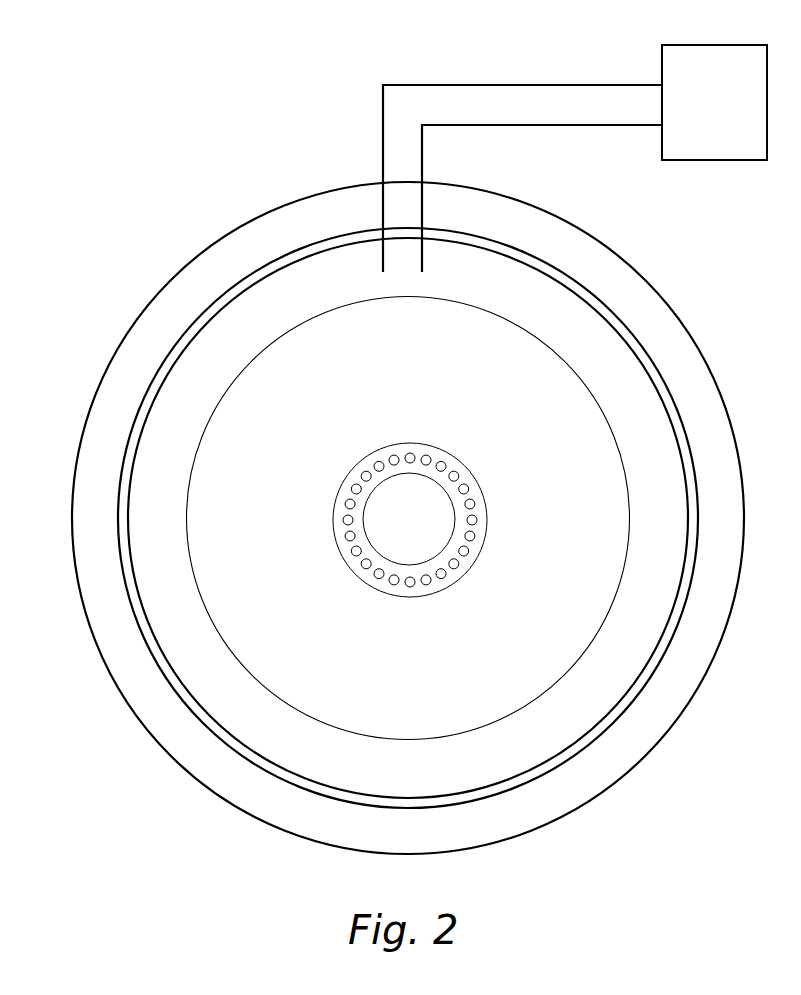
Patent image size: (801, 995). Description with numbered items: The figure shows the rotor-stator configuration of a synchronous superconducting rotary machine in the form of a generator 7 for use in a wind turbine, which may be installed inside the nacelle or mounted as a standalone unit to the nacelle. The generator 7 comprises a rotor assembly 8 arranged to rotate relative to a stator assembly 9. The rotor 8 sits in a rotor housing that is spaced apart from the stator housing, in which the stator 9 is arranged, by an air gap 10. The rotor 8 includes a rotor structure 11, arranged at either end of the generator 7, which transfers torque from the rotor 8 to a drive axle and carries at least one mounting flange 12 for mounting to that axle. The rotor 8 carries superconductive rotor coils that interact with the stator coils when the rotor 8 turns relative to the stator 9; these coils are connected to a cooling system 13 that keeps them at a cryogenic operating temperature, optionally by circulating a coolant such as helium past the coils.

The generator 7 is at (153, 188).
The rotor assembly 8 is at (227, 352).
The stator assembly 9 is at (140, 365).
The air gap 10 is at (147, 410).
The rotor structure 11 is at (425, 407).
The mounting flange 12 is at (477, 512).
The cooling system 13 is at (575, 158).